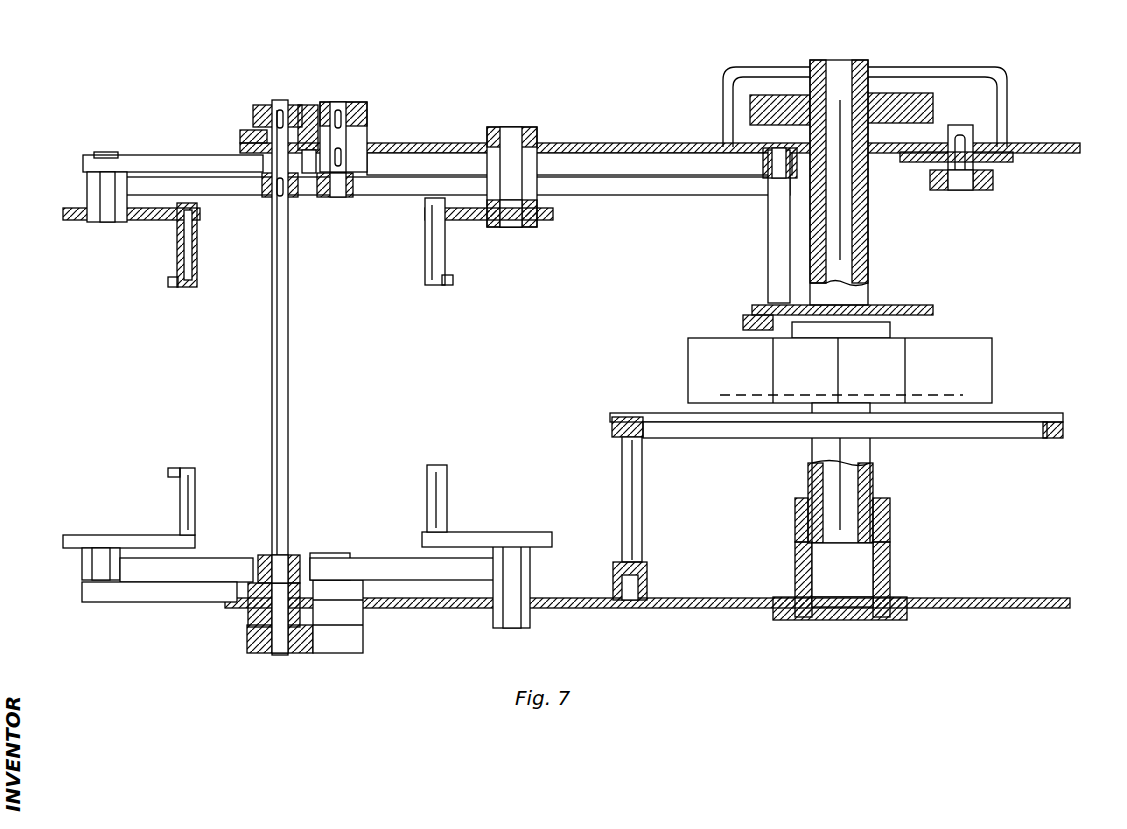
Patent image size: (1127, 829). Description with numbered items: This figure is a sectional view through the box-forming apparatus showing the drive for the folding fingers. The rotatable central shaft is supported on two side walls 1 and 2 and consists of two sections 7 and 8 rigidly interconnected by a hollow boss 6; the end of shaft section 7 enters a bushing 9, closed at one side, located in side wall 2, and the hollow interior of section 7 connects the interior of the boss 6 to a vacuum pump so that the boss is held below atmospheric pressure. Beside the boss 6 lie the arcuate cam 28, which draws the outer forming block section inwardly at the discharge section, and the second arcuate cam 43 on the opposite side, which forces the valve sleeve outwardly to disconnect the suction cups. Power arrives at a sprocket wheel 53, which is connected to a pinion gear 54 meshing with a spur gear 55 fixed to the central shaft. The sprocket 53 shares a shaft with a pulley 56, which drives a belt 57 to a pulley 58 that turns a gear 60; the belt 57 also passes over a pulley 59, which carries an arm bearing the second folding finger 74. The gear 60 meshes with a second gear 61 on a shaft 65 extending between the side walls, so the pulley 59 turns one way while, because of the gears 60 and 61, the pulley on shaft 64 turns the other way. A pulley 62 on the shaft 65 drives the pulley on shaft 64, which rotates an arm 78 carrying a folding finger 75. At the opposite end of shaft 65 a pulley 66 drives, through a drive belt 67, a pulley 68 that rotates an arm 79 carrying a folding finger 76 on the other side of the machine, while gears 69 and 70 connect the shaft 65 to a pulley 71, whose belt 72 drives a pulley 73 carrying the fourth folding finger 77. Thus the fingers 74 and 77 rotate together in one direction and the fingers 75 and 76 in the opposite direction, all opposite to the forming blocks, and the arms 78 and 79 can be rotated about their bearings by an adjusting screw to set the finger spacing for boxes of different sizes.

The side wall 1 is at (686, 143).
The side wall 2 is at (695, 607).
The hollow boss 6 is at (965, 347).
The shaft section 7 is at (873, 472).
The shaft section 8 is at (868, 238).
The bushing 9 is at (892, 522).
The arcuate cam 28 is at (628, 416).
The second arcuate cam 43 is at (740, 320).
The sprocket wheel 53 is at (1013, 162).
The pinion gear 54 is at (1000, 104).
The spur gear 55 is at (905, 95).
The pulley 56 is at (995, 188).
The belt 57 is at (692, 186).
The pulley 58 is at (345, 198).
The pulley 59 is at (520, 227).
The gear 60 is at (360, 104).
The second gear 61 is at (258, 105).
The pulley 62 is at (302, 180).
The shaft 64 is at (102, 222).
The shaft 65 is at (289, 378).
The pulley 66 is at (285, 560).
The drive belt 67 is at (222, 570).
The pulley 68 is at (88, 574).
The gear 69 is at (256, 653).
The gear 70 is at (340, 653).
The pulley 71 is at (347, 558).
The belt 72 is at (400, 572).
The pulley 73 is at (533, 572).
The folding finger 74 is at (435, 286).
The folding finger 75 is at (182, 287).
The folding finger 76 is at (180, 499).
The folding finger 77 is at (448, 498).
The arm 78 is at (172, 162).
The arm 79 is at (164, 600).